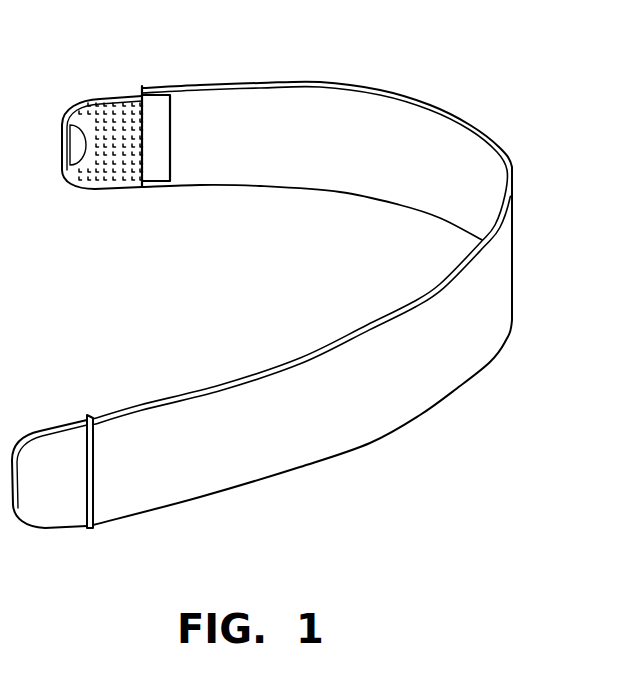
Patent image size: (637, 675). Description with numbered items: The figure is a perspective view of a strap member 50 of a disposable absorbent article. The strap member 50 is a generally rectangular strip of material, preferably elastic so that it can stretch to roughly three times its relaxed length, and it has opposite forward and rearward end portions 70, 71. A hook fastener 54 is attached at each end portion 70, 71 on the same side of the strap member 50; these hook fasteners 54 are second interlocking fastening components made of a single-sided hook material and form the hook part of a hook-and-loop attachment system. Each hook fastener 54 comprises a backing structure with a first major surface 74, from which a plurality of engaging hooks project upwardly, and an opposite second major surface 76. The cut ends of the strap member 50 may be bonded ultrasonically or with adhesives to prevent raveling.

The strap member 50 is at (534, 235).
The hook fastener 54 is at (97, 97).
The forward end portion 70 is at (221, 72).
The rearward end portion 71 is at (209, 508).
The first major surface 74 is at (127, 163).
The second major surface 76 is at (43, 450).